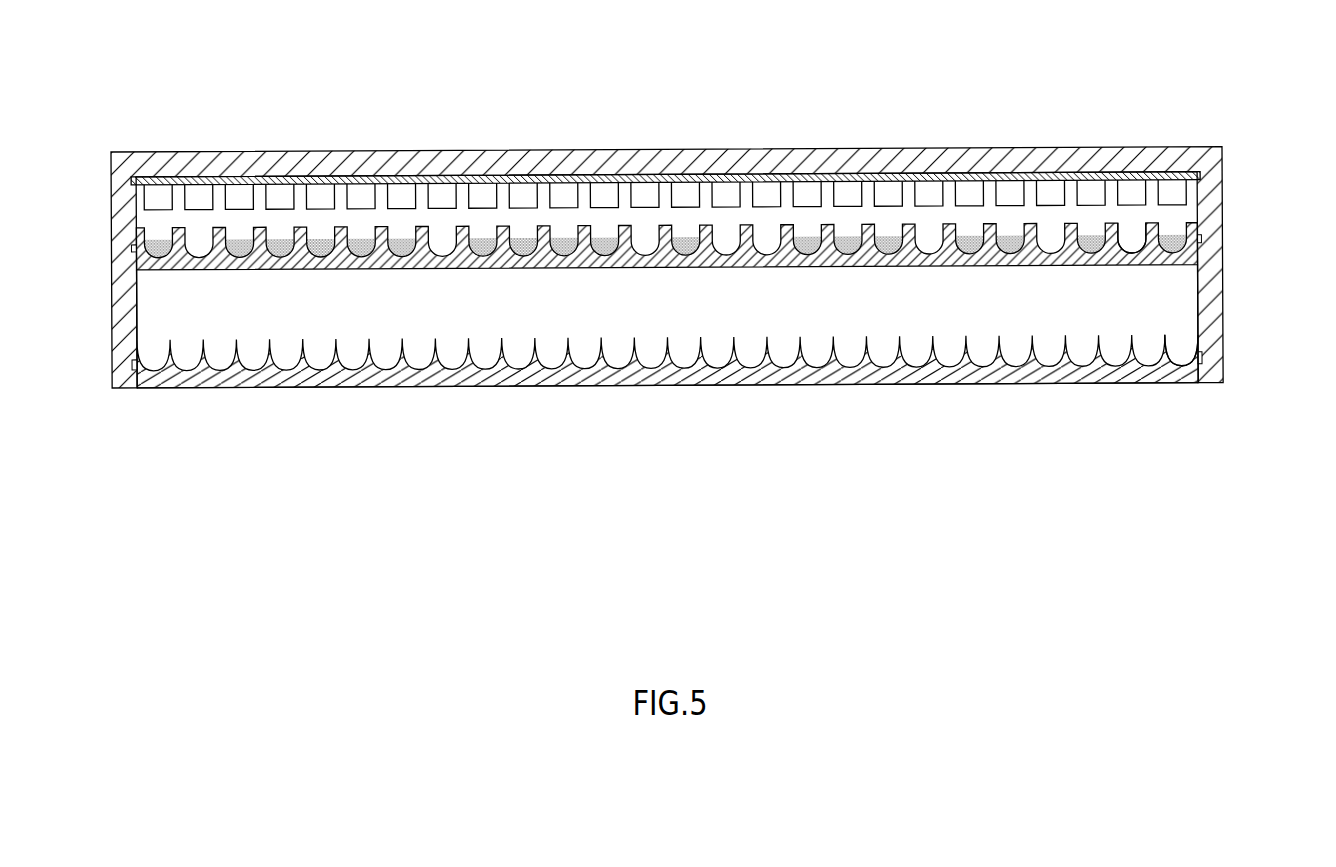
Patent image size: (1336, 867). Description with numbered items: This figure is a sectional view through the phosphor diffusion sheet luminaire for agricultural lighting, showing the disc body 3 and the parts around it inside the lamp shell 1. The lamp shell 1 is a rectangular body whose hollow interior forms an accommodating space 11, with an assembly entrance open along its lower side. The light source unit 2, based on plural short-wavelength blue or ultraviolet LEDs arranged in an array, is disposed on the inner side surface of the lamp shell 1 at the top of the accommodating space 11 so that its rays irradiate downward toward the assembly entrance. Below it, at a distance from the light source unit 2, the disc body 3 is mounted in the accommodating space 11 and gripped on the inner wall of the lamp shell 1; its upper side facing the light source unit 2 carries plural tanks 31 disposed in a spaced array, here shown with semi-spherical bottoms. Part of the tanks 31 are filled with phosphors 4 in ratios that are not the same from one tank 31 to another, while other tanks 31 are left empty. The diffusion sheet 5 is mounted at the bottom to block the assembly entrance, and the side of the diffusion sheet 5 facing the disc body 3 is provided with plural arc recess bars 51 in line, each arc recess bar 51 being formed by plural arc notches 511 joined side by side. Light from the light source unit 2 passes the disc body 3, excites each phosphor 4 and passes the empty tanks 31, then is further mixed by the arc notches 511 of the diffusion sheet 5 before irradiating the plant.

The lamp shell 1 is at (982, 147).
The accommodating space 11 is at (1165, 322).
The light source unit 2 is at (1194, 193).
The disc body 3 is at (1163, 267).
The tank 31 is at (1133, 247).
The phosphor 4 is at (1003, 232).
The diffusion sheet 5 is at (1120, 388).
The arc recess bar 51 is at (1173, 380).
The arc notch 511 is at (1180, 352).